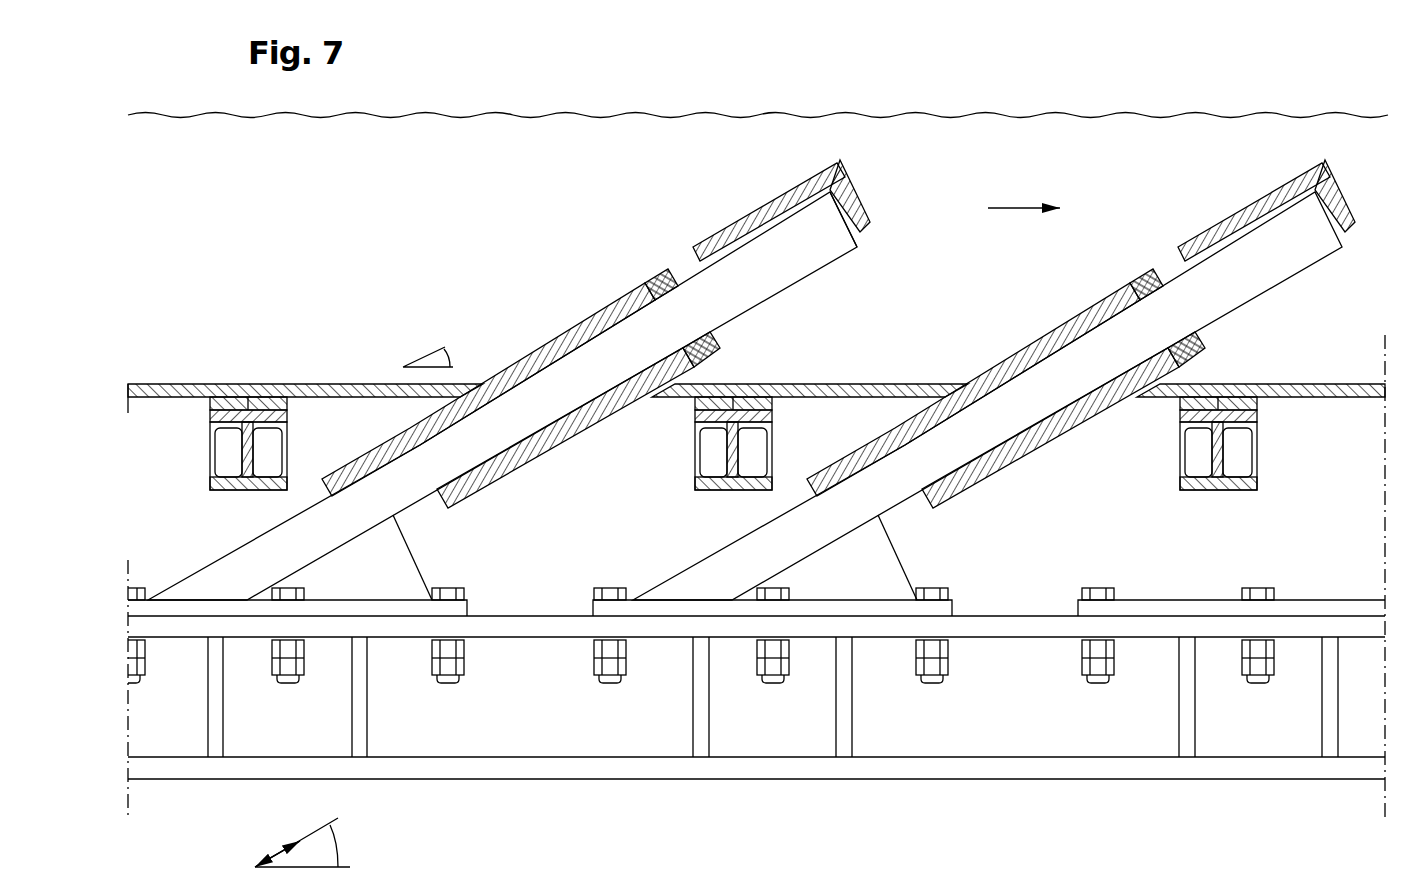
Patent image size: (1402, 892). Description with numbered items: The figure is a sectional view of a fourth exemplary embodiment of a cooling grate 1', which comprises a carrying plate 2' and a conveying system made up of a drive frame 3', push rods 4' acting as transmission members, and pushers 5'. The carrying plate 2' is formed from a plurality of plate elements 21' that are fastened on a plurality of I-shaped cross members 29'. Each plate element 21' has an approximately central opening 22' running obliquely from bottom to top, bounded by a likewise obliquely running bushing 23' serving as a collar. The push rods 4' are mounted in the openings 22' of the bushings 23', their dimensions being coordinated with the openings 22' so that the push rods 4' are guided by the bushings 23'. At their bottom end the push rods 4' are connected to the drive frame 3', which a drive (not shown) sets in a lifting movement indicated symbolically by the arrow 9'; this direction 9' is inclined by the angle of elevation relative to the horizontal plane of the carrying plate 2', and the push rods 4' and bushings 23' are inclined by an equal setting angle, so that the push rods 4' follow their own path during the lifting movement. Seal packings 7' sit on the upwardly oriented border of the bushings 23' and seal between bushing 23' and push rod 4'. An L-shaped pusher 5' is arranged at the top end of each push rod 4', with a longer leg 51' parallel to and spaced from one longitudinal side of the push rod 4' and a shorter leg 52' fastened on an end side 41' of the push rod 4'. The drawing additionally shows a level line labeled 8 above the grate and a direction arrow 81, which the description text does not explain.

The cooling grate 1' is at (749, 498).
The carrying plate 2' is at (305, 343).
The drive frame 3' is at (749, 628).
The push rods 4' is at (502, 396).
The pushers 5' is at (994, 368).
The seal packings 7' is at (618, 275).
The surface level 8 is at (468, 171).
The arrow / direction of lifting movement 9' is at (288, 833).
The plate elements 21' is at (1018, 348).
The opening 22' is at (578, 436).
The bushing 23' is at (488, 386).
The I-shaped cross members 29' is at (694, 443).
The end side of push rod 41' is at (905, 222).
The longer leg of pusher 51' is at (766, 211).
The shorter leg of pusher 52' is at (882, 188).
The flow direction 81 is at (1012, 205).